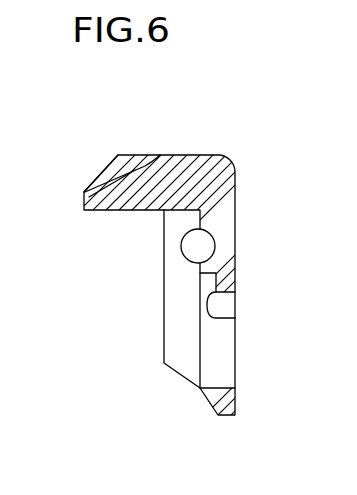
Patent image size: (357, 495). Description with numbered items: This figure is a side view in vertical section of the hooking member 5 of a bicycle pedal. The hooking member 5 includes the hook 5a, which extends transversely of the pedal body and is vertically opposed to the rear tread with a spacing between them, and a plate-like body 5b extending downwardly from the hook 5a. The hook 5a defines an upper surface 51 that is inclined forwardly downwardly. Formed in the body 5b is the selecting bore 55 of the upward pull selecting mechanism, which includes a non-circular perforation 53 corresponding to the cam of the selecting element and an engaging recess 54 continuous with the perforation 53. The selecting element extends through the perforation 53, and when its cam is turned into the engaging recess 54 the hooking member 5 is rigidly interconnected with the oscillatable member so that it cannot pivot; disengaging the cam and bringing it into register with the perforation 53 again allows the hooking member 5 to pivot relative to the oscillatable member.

The hooking member 5 is at (188, 153).
The hook 5a is at (93, 187).
The plate-like body 5b is at (232, 270).
The upper surface 51 is at (125, 165).
The non-circular perforation 53 is at (215, 371).
The engaging recess 54 is at (235, 318).
The selecting bore 55 is at (306, 358).